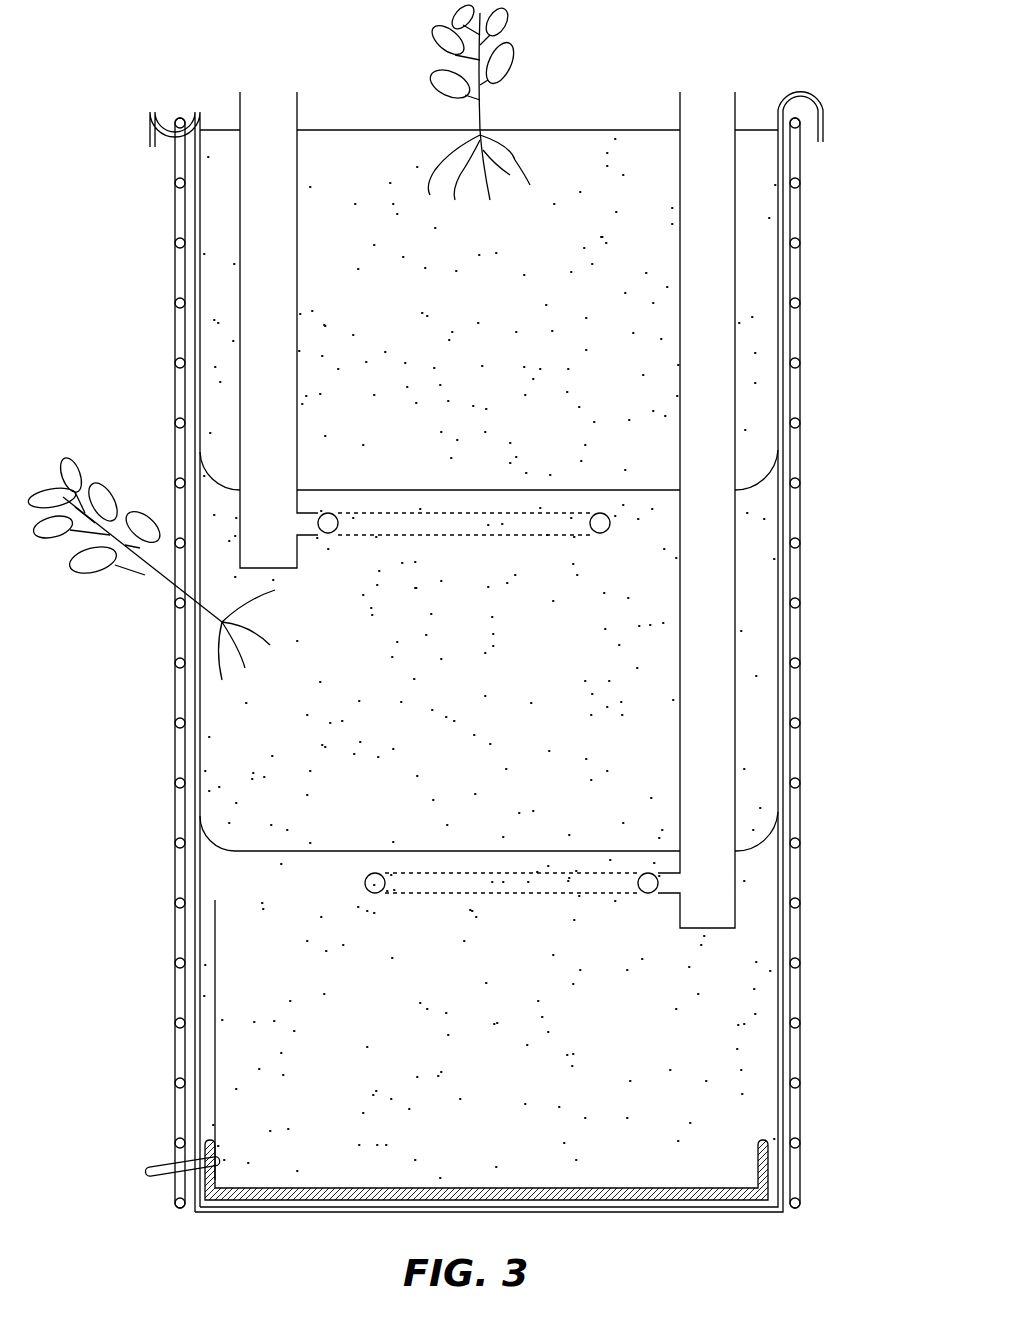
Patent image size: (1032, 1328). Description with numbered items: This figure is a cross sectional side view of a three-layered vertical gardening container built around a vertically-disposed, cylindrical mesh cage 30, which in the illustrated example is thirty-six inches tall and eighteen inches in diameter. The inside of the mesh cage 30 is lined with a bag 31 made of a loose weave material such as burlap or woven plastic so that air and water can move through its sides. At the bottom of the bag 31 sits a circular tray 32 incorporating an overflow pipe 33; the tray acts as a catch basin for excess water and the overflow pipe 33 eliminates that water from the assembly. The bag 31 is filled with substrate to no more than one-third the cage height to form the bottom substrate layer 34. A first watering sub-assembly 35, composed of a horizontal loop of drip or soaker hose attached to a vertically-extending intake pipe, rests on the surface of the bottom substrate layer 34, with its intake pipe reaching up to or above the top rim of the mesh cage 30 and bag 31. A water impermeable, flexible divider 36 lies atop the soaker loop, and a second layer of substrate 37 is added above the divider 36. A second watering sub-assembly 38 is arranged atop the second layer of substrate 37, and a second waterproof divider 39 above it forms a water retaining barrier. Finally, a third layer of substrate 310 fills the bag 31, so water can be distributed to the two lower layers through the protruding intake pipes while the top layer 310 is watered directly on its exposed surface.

The mesh cage 30 is at (803, 768).
The bag 31 is at (775, 1018).
The circular tray 32 is at (768, 1180).
The overflow pipe 33 is at (160, 1168).
The bottom substrate layer 34 is at (285, 1017).
The first watering sub-assembly 35 is at (703, 607).
The water impermeable flexible divider 36 is at (315, 851).
The second layer of substrate 37 is at (350, 720).
The second watering sub-assembly 38 is at (257, 456).
The second waterproof divider 39 is at (585, 490).
The third layer of substrate 310 is at (585, 372).